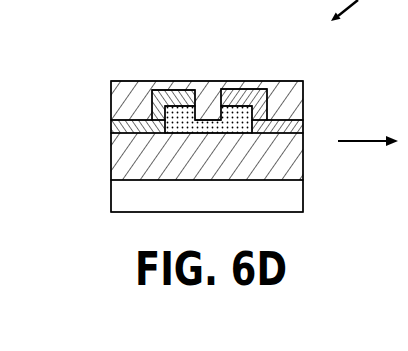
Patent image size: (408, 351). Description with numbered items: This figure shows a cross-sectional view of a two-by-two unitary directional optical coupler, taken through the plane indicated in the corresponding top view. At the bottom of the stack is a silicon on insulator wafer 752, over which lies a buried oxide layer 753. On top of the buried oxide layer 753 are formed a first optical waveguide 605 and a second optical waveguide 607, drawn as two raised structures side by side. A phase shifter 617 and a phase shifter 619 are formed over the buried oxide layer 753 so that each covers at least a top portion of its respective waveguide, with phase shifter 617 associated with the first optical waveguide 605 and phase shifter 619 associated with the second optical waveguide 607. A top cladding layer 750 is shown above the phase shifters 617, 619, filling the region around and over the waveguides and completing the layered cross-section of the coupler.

The top cladding layer 750 is at (278, 93).
The phase shifter 617 is at (136, 121).
The phase shifter 619 is at (295, 128).
The first optical waveguide 605 is at (173, 91).
The second optical waveguide 607 is at (233, 89).
The buried oxide layer 753 is at (118, 151).
The silicon on insulator wafer 752 is at (290, 198).